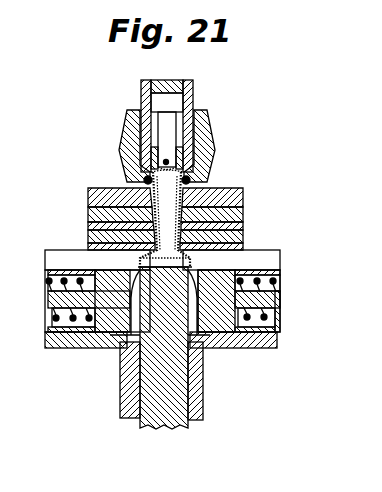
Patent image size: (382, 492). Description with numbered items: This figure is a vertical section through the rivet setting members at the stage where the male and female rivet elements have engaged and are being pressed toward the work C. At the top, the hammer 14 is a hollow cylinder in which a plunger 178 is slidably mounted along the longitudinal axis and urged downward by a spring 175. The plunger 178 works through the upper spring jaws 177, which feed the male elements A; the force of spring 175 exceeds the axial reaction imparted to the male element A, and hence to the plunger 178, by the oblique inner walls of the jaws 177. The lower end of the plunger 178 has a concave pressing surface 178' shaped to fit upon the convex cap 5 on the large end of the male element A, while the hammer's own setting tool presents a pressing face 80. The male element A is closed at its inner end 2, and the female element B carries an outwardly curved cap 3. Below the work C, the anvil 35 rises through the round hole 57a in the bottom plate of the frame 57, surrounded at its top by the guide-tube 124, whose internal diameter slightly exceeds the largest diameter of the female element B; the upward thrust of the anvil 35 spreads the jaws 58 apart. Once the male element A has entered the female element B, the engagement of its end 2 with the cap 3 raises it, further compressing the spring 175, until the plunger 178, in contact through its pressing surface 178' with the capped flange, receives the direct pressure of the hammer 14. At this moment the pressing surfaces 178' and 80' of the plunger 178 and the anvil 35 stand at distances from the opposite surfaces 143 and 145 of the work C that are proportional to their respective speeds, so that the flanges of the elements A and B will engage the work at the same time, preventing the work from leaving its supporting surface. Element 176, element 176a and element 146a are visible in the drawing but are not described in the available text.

The hammer 14 is at (146, 104).
The spring 175 is at (166, 86).
The head 176 is at (171, 103).
The seat 176a is at (152, 150).
The upper spring jaws 177 is at (133, 138).
The plunger 178 is at (201, 141).
The concave pressing surface 178' is at (191, 209).
The cap 5 is at (197, 151).
The pressing face 80 is at (139, 173).
The pressing surface of the anvil 80' is at (231, 260).
The surface of the work 143 is at (230, 188).
The male element A is at (240, 222).
The female element B is at (240, 238).
The work C is at (62, 208).
The lower surface of the work 145 is at (100, 249).
The plate 146a is at (62, 251).
The inner end 2 is at (80, 260).
The cap 3 is at (46, 291).
The jaws 58 is at (107, 318).
The frame 57 is at (259, 346).
The round hole 57a is at (125, 371).
The anvil 35 is at (201, 385).
The guide-tube 124 is at (131, 399).